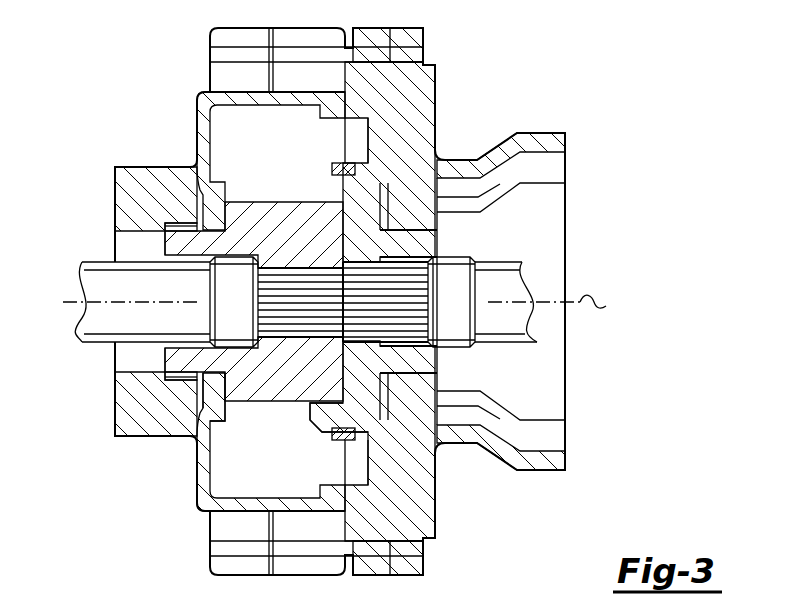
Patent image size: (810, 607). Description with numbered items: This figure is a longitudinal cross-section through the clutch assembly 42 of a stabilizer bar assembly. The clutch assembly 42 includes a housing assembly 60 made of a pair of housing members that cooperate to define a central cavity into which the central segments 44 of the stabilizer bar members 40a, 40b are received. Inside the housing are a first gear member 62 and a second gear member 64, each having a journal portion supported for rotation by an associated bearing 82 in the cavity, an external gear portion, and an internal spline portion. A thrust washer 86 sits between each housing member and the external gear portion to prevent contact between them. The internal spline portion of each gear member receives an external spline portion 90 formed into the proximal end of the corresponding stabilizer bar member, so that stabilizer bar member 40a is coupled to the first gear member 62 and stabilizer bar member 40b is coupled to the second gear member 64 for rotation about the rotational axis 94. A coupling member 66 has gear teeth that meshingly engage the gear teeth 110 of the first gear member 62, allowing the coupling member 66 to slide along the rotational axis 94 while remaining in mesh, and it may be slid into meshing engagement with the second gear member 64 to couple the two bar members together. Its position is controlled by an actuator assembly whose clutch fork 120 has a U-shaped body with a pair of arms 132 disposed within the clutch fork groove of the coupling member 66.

The stabilizer bar member 40a is at (96, 314).
The stabilizer bar member 40b is at (512, 340).
The clutch assembly 42 is at (485, 510).
The central segment 44 is at (97, 263).
The housing assembly 60 is at (445, 40).
The first gear member 62 is at (263, 210).
The second gear member 64 is at (372, 228).
The coupling member 66 is at (300, 430).
The bearing 82 is at (173, 375).
The thrust washer 86 is at (213, 197).
The external spline portion 90 is at (220, 297).
The rotational axis 94 is at (606, 306).
The gear teeth 110 is at (247, 405).
The clutch fork 120 is at (341, 149).
The arms 132 is at (343, 440).